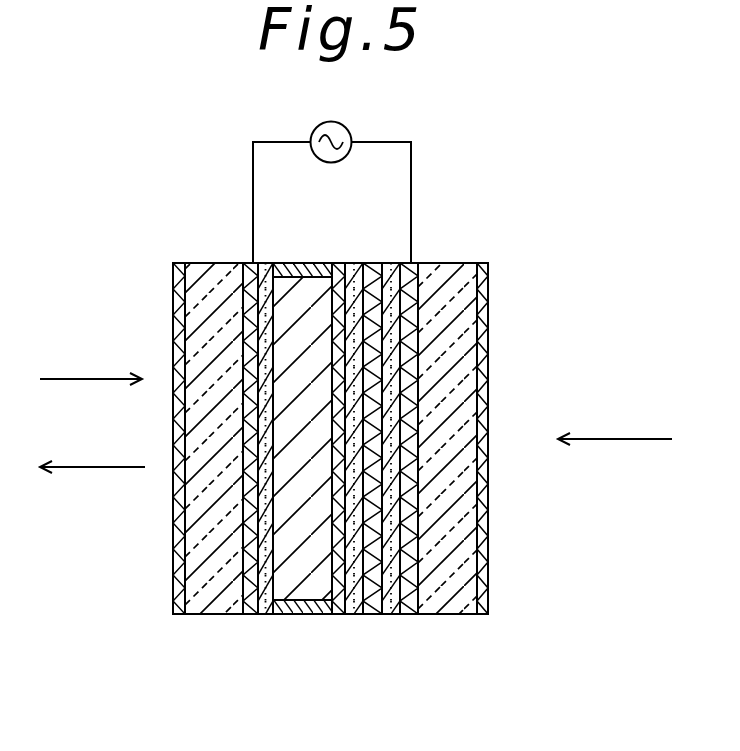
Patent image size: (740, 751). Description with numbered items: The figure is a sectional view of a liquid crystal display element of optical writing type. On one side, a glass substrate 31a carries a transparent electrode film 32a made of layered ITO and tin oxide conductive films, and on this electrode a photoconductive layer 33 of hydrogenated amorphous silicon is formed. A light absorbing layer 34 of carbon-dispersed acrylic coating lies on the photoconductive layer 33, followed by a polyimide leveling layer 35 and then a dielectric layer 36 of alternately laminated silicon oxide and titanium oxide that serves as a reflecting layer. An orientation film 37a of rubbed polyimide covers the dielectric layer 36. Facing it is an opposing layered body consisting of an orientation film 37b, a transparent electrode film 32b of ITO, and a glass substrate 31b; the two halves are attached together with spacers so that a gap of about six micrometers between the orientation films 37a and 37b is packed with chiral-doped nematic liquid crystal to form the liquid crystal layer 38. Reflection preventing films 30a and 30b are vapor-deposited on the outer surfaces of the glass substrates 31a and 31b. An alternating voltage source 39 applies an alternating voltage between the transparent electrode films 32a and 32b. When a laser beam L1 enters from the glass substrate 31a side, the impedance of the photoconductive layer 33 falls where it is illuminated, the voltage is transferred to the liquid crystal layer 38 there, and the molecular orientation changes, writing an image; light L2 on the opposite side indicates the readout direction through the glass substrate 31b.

The reflection preventing film 30a is at (488, 293).
The reflection preventing film 30b is at (173, 274).
The glass substrate 31a is at (463, 283).
The glass substrate 31b is at (208, 285).
The transparent electrode film 32a is at (410, 608).
The transparent electrode film 32b is at (252, 610).
The photoconductive layer 33 is at (390, 263).
The light absorbing layer 34 is at (375, 263).
The leveling layer 35 is at (364, 608).
The dielectric layer 36 is at (347, 265).
The orientation film 37a is at (337, 608).
The orientation film 37b is at (270, 608).
The liquid crystal layer 38 is at (287, 293).
The alternating voltage source 39 is at (347, 133).
The laser beam L1 is at (620, 437).
The transmitted light L2 is at (93, 378).